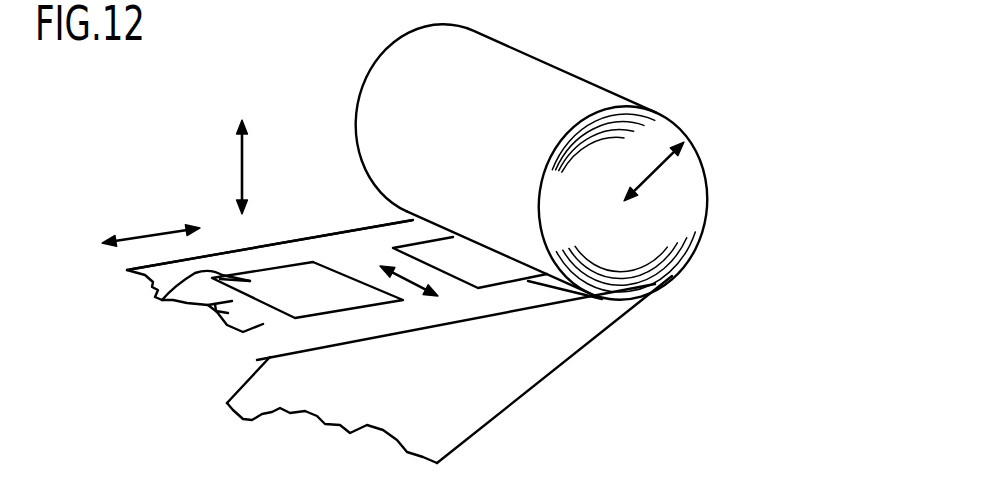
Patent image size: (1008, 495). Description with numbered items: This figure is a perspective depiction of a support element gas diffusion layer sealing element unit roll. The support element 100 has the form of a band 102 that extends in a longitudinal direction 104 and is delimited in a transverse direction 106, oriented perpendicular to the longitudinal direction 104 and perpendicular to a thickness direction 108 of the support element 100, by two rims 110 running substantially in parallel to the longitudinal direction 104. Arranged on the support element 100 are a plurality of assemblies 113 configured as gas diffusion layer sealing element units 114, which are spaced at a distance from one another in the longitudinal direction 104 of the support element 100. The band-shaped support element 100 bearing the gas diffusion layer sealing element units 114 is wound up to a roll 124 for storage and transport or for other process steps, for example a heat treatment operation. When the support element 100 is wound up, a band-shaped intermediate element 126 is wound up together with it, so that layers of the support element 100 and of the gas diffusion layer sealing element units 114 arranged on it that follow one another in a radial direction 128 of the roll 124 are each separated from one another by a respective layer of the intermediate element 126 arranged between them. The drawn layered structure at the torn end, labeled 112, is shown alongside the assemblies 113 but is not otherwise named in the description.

The support element 100 is at (220, 263).
The band 102 is at (243, 332).
The longitudinal direction 104 is at (150, 235).
The transverse direction 106 is at (403, 277).
The thickness direction 108 is at (245, 165).
The rims 110 is at (330, 236).
The second layer 112 is at (207, 310).
The assemblies 113 is at (163, 300).
The gas diffusion layer sealing element unit 114 is at (285, 300).
The roll 124 is at (570, 83).
The intermediate element 126 is at (557, 340).
The radial direction 128 is at (655, 173).